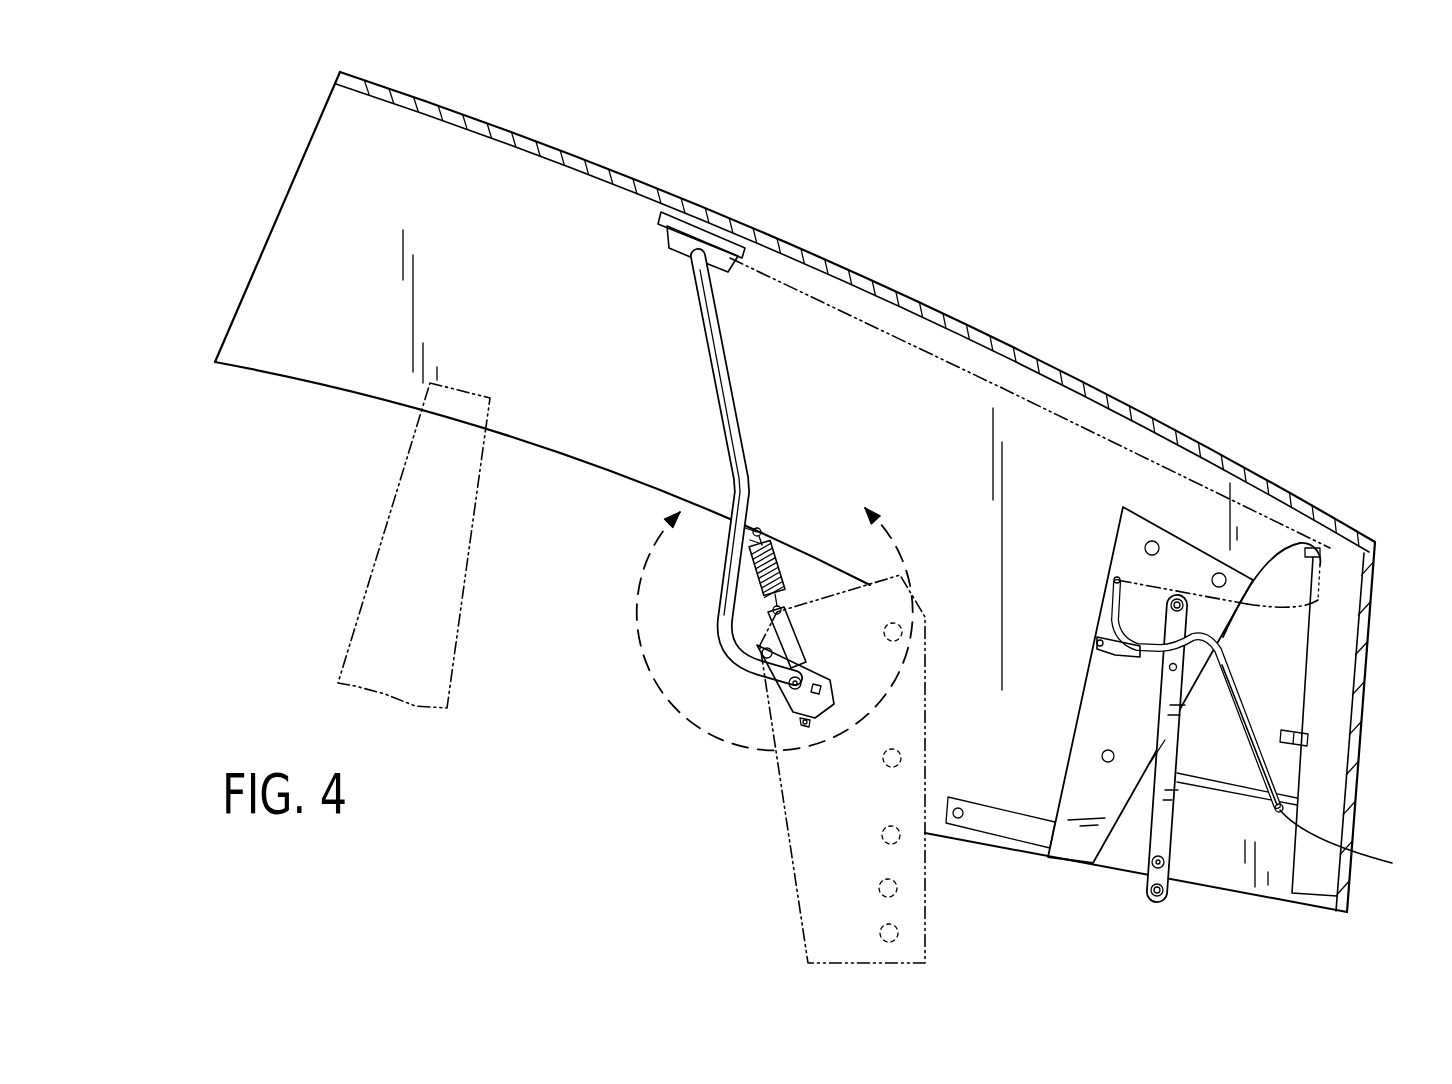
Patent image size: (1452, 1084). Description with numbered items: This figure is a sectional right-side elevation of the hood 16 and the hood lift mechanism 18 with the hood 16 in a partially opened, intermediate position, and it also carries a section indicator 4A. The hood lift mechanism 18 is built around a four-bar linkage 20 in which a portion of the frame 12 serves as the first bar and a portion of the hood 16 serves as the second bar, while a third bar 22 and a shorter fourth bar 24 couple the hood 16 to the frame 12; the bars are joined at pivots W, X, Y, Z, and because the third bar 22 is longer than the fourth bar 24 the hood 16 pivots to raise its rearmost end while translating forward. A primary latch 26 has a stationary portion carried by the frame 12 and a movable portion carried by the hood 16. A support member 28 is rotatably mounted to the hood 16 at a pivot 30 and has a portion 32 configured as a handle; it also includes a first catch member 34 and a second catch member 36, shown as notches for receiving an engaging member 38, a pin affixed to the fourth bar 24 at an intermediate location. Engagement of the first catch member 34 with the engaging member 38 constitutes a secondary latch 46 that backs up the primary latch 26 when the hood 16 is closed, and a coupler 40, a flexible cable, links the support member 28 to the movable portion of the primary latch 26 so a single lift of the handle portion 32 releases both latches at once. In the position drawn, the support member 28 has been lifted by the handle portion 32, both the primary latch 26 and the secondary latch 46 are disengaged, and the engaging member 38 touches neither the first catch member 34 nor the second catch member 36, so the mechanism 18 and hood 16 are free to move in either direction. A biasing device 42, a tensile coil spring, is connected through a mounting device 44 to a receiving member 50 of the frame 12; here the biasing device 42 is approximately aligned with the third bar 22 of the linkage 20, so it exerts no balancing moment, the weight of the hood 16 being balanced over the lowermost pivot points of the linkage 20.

The frame 12 is at (383, 548).
The hood 16 is at (534, 139).
The hood lift mechanism 18 is at (612, 820).
The four-bar linkage 20 is at (760, 785).
The third bar 22 is at (732, 364).
The fourth bar 24 is at (1180, 812).
The primary latch 26 is at (672, 224).
The support member 28 is at (1220, 662).
The pivot 30 is at (1098, 638).
The handle portion 32 is at (1358, 849).
The first catch member 34 is at (1233, 708).
The second catch member 36 is at (1142, 660).
The engaging member 38 is at (1173, 671).
The coupler 40 is at (905, 337).
The biasing device 42 is at (779, 567).
The mounting device 44 is at (797, 631).
The secondary latch 46 is at (1210, 620).
The receiving member 50 is at (787, 707).
The section view indicator 4A is at (772, 622).
The pivot W is at (718, 216).
The pivot X is at (1177, 593).
The pivot Y is at (1160, 902).
The pivot Z is at (800, 680).